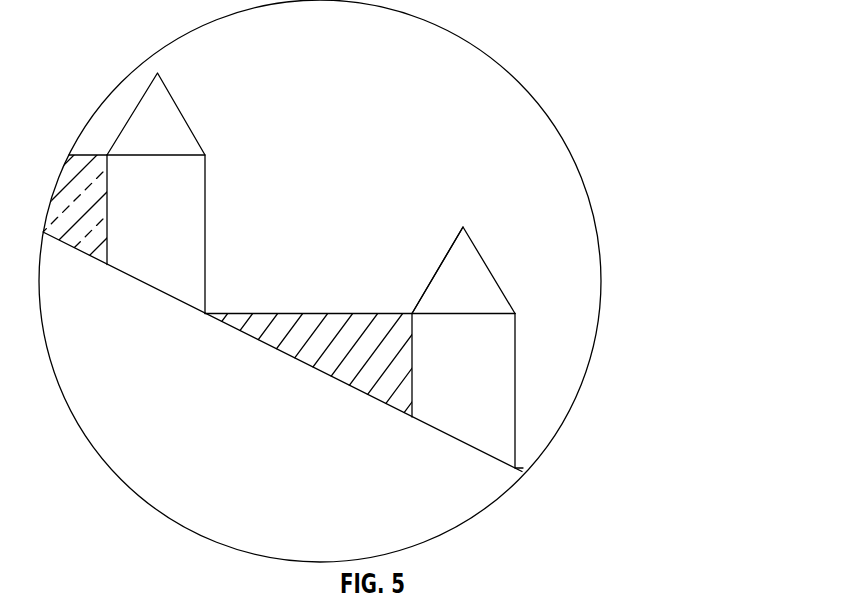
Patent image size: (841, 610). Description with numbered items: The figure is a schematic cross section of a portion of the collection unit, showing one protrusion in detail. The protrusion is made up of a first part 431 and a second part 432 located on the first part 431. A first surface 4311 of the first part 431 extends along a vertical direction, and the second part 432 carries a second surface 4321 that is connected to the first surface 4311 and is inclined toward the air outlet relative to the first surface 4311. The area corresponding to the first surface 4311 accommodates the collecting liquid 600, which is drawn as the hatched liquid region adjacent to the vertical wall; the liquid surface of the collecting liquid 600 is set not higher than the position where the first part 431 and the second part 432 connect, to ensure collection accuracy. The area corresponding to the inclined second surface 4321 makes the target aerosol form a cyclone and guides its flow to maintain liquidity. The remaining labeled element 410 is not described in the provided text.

The substrate 410 is at (242, 328).
The collecting liquid 600 is at (322, 368).
The first part 431 is at (463, 372).
The first surface 4311 is at (410, 383).
The second part 432 is at (460, 288).
The second surface 4321 is at (438, 266).